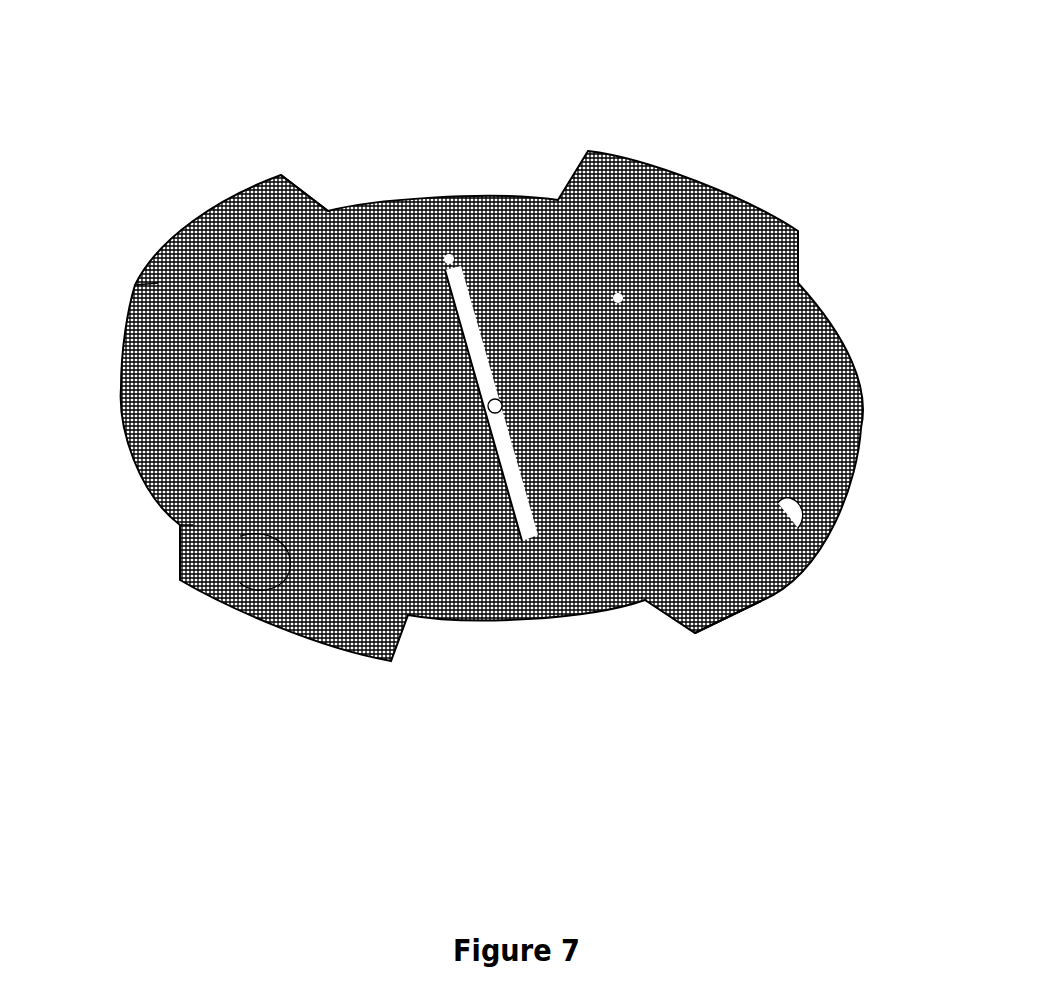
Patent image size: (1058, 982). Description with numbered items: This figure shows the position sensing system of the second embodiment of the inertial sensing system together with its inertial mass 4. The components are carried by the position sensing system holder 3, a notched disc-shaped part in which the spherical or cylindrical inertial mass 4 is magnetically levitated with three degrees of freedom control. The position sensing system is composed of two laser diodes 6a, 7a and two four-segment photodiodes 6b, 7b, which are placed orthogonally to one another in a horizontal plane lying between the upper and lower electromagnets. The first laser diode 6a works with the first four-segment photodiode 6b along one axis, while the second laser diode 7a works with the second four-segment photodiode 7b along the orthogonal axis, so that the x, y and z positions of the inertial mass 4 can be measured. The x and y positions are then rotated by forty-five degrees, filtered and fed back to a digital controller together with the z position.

The position sensing system holder 3 is at (442, 193).
The inertial mass 4 is at (487, 398).
The laser diode 1 6a is at (272, 278).
The 4 segments photodiode 1 6b is at (770, 495).
The laser diode 2 7a is at (255, 545).
The 4 segments photodiode 2 7b is at (604, 245).